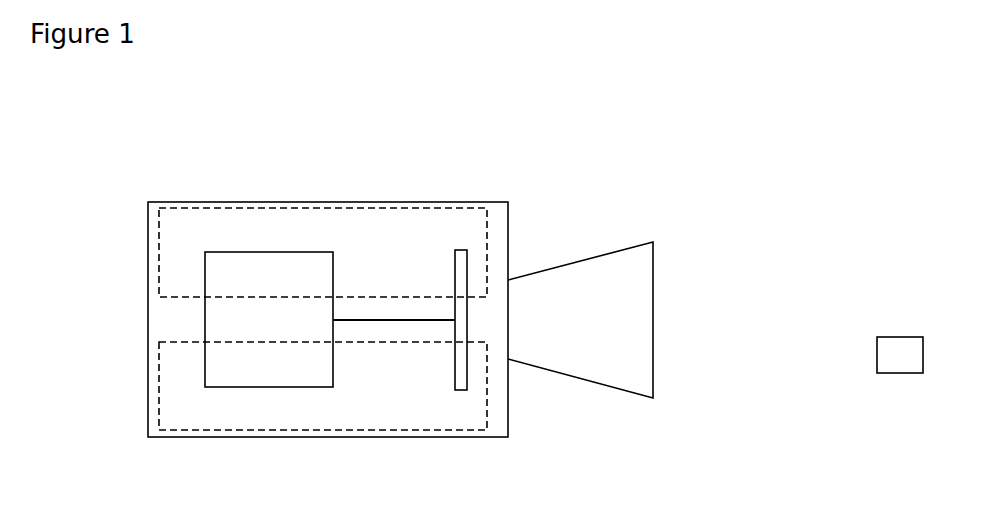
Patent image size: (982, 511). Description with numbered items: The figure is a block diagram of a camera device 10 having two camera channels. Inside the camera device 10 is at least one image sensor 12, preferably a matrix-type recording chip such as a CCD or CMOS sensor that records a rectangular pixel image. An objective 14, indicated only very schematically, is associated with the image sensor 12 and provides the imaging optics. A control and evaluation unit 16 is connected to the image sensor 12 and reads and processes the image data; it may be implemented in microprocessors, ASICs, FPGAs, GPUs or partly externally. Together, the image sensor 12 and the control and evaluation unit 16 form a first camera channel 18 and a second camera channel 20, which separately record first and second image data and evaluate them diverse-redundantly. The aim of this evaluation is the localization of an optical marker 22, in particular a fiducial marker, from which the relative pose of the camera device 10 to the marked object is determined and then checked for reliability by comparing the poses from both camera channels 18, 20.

The camera device 10 is at (787, 172).
The image sensor 12 is at (460, 377).
The objective 14 is at (616, 344).
The control and evaluation unit 16 is at (228, 323).
The first camera channel 18 is at (178, 235).
The second camera channel 20 is at (182, 403).
The optical marker 22 is at (887, 358).